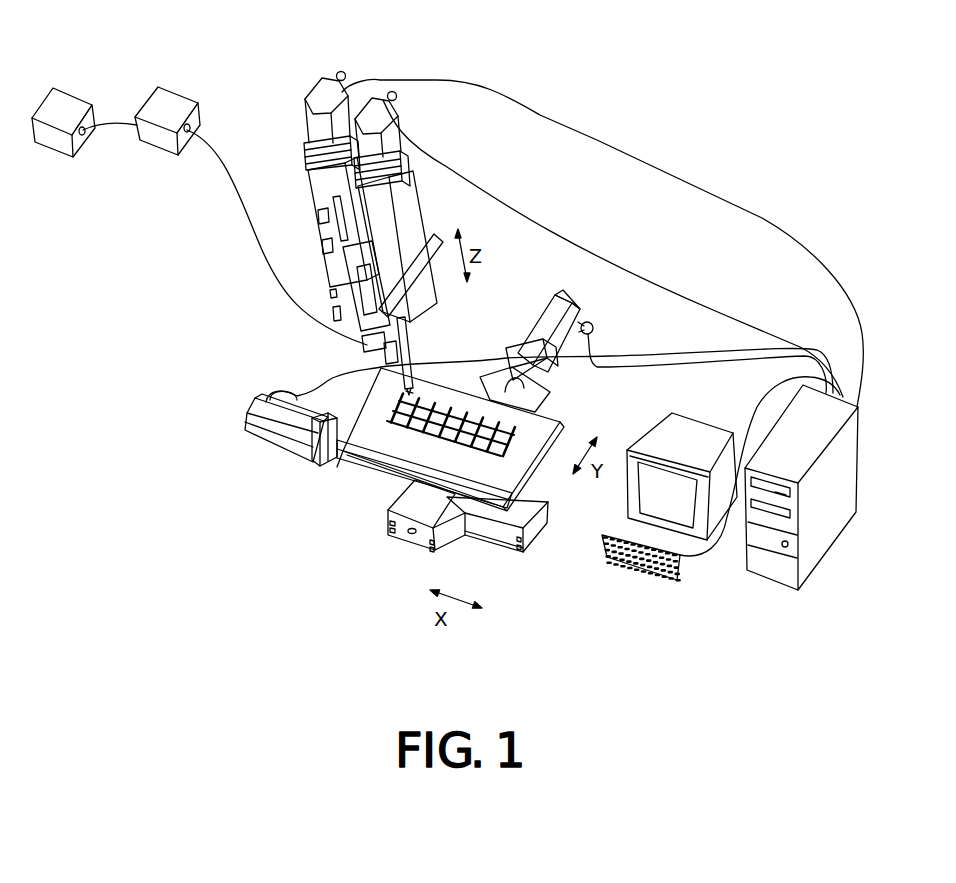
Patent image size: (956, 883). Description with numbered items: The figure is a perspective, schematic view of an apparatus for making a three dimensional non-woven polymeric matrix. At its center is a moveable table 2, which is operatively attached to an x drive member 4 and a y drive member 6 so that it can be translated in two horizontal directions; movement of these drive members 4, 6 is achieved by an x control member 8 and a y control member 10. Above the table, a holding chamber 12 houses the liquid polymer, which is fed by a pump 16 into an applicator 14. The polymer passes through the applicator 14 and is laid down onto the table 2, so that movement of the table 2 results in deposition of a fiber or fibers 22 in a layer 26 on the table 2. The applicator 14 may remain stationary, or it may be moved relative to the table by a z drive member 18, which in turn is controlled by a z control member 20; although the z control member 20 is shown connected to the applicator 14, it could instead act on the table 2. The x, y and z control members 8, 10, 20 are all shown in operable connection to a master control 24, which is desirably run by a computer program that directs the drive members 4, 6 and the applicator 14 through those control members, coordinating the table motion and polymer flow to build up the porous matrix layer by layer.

The moveable table 2 is at (374, 433).
The x drive member 4 is at (505, 558).
The y drive member 6 is at (398, 550).
The x control member 8 is at (266, 384).
The y control member 10 is at (598, 306).
The holding chamber 12 is at (72, 100).
The applicator 14 is at (393, 345).
The pump 16 is at (172, 100).
The z drive member 18 is at (292, 187).
The z control member 20 is at (424, 71).
The fiber 22 is at (418, 386).
The master control 24 is at (858, 404).
The layer 26 is at (402, 397).